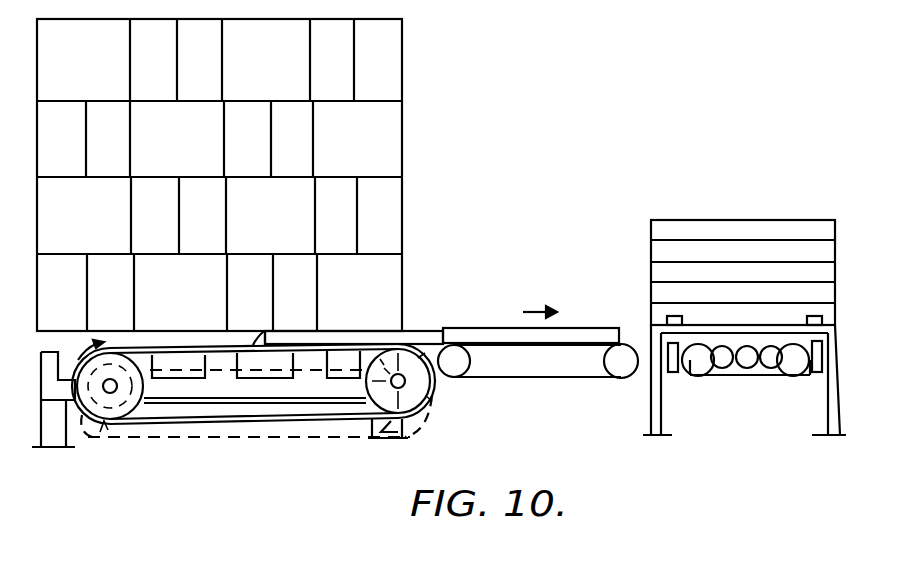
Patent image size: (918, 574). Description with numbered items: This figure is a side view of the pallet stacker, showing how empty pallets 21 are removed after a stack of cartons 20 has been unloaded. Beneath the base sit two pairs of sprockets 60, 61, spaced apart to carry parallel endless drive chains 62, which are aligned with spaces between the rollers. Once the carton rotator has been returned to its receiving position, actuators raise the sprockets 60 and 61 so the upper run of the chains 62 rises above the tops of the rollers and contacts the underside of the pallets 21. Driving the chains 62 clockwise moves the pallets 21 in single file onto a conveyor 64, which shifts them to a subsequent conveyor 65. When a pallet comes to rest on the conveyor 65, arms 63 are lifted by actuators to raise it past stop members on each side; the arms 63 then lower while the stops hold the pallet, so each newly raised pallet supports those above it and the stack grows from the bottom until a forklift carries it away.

The cartons 20 is at (394, 39).
The pallets 21 is at (490, 338).
The sprockets 60 is at (116, 415).
The sprockets 61 is at (432, 402).
The drive chains 62 is at (317, 423).
The arms 63 is at (672, 372).
The conveyor 64 is at (563, 379).
The conveyor 65 is at (775, 374).